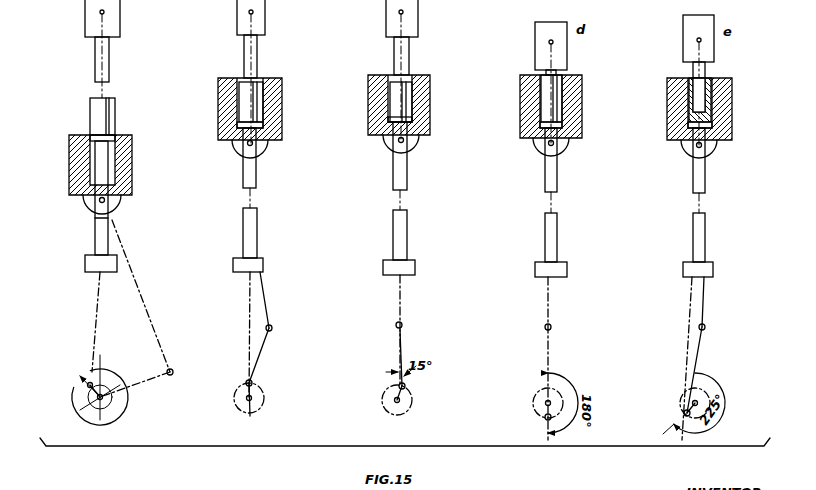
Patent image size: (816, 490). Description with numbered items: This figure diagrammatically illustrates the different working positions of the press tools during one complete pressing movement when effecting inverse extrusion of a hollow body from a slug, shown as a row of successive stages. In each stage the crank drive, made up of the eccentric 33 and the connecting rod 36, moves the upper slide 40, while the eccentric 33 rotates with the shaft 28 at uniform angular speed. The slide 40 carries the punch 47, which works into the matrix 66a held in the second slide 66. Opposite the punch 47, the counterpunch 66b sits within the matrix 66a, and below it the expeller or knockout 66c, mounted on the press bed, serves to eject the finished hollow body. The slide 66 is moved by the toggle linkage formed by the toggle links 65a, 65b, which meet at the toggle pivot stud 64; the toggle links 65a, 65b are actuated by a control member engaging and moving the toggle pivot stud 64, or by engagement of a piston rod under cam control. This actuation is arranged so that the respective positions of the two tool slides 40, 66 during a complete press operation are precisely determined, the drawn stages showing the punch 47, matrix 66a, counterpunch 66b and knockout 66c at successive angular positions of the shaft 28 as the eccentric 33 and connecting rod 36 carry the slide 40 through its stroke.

The slide 40 is at (120, 24).
The punch 47 is at (109, 62).
The matrix 66a is at (112, 128).
The slide 66 is at (132, 178).
The counterpunch 66b is at (92, 198).
The expeller or knockout 66c is at (108, 218).
The connecting rod 36 is at (92, 313).
The toggle link 65b is at (150, 322).
The toggle pivot stud 64 is at (173, 371).
The toggle link 65a is at (150, 378).
The eccentric 33 is at (88, 386).
The shaft 28 is at (87, 411).